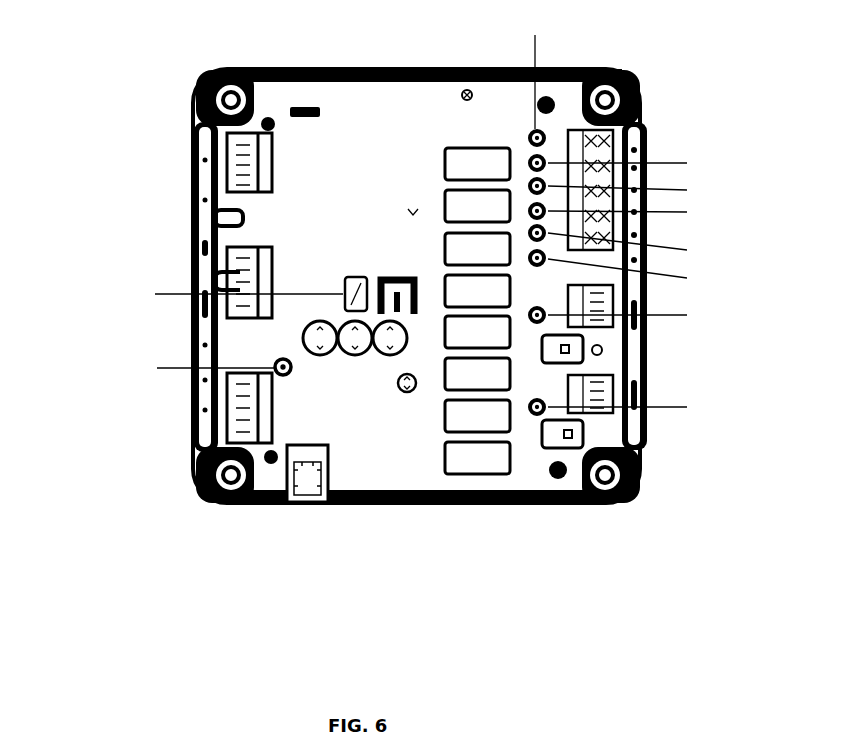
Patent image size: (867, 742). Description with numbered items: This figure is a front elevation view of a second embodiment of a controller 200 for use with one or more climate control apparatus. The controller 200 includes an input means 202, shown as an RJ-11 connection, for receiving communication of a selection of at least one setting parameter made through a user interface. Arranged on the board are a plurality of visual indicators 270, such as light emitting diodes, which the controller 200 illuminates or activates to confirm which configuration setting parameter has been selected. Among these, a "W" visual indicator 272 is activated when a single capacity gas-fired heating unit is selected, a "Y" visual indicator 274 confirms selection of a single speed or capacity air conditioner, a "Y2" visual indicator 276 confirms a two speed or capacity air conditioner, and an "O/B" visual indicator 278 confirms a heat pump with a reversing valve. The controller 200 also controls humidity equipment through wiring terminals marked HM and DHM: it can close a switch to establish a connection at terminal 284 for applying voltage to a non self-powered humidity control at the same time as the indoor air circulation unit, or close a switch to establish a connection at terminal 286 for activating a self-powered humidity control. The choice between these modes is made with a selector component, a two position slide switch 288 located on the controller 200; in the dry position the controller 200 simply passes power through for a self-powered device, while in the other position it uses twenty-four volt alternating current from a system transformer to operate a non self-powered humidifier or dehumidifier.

The controller 200 is at (383, 590).
The input means 202 is at (314, 504).
The visual indicators 270 is at (513, 138).
The "W" visual indicator 272 is at (543, 131).
The "Y" visual indicator 274 is at (545, 184).
The "Y2" visual indicator 276 is at (548, 218).
The "O/B" visual indicator 278 is at (548, 254).
The HM wiring terminal 284 is at (548, 318).
The DHM wiring terminal 286 is at (548, 404).
The 2 position slide switch 288 is at (542, 345).